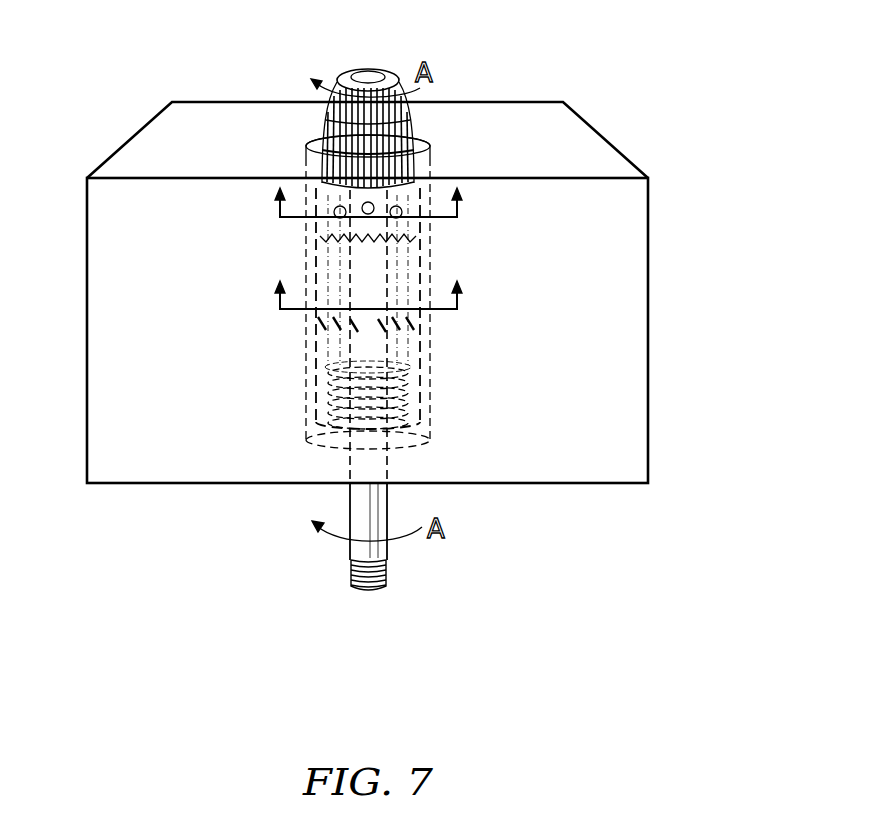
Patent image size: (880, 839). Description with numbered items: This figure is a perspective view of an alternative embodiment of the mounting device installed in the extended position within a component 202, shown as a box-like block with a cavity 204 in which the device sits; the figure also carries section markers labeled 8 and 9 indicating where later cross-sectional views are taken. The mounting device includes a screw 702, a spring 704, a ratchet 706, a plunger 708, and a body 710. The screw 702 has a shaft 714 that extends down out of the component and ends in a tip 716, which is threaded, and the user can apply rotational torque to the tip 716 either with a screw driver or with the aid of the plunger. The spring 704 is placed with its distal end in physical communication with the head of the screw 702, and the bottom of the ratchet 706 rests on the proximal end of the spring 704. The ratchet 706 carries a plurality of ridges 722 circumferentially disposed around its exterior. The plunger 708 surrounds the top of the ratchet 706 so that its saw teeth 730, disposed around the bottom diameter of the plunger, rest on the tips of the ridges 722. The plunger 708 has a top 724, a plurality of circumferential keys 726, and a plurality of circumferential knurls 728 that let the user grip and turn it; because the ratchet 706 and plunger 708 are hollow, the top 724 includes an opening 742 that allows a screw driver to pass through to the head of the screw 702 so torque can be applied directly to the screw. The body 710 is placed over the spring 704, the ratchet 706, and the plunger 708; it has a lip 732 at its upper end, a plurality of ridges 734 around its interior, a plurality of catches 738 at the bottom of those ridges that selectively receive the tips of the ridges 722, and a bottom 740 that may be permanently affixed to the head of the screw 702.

The housing 202 is at (605, 129).
The housing cavity 204 is at (322, 311).
The screw 702 is at (340, 501).
The spring 704 is at (420, 393).
The ratchet 706 is at (400, 285).
The plunger 708 is at (421, 111).
The body 710 is at (440, 383).
The shaft 714 is at (386, 517).
The tip 716 is at (388, 582).
The ridges 722 is at (433, 352).
The top 724 is at (343, 75).
The circumferential keys 726 is at (420, 198).
The circumferential knurls 728 is at (413, 130).
The saw teeth 730 is at (318, 243).
The lip 732 is at (313, 168).
The ridges 734 is at (424, 328).
The catches 738 is at (307, 348).
The bottom 740 is at (312, 452).
The opening 742 is at (390, 75).
The section line 8- 8 is at (370, 296).
The section line 9- 9 is at (370, 204).